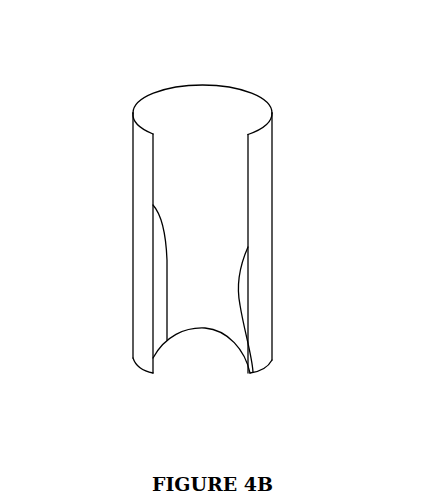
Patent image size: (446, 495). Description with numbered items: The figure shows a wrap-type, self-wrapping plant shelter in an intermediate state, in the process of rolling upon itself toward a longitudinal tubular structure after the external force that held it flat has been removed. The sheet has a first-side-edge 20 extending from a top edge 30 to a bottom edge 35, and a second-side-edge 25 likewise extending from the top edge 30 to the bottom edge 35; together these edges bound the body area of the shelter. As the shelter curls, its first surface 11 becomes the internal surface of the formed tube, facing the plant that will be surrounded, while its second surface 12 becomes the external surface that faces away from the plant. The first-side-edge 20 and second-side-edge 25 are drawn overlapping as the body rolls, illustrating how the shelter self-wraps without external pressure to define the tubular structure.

The first surface 11 is at (173, 113).
The second surface 12 is at (262, 163).
The first-side-edge 20 is at (253, 372).
The second-side-edge 25 is at (167, 340).
The top edge 30 is at (206, 86).
The bottom edge 35 is at (199, 334).